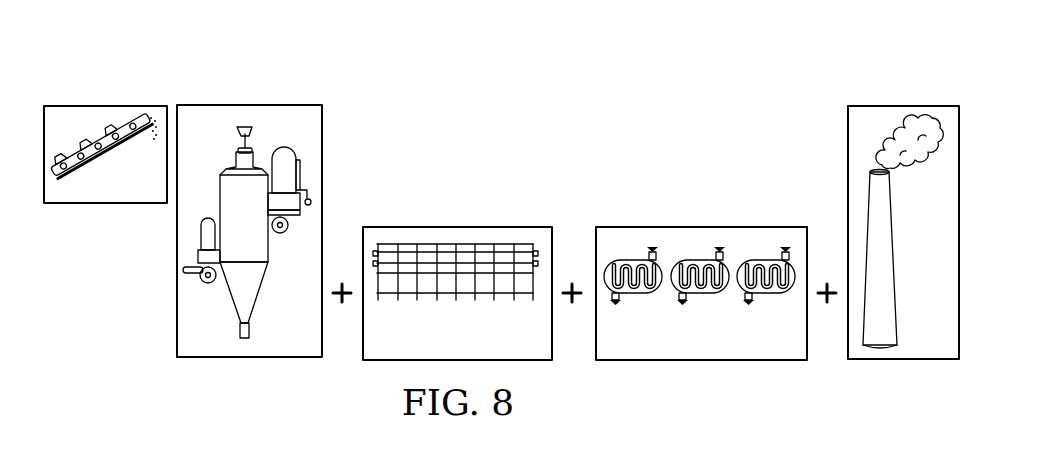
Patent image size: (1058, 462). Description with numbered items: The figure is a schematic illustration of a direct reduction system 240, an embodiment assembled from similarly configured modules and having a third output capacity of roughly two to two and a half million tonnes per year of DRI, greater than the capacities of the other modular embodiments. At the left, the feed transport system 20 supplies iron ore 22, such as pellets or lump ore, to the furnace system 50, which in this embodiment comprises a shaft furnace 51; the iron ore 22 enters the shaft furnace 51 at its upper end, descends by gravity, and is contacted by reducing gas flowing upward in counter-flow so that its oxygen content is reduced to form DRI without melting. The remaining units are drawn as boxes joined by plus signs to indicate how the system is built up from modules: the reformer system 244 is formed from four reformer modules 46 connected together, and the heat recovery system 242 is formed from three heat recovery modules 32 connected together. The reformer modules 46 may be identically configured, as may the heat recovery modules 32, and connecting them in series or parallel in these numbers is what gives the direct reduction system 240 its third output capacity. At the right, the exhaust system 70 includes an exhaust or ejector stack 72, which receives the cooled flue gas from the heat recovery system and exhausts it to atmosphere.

The feed transport system 20 is at (98, 100).
The iron ore 22 is at (151, 148).
The furnace system 50 is at (243, 98).
The shaft furnace 51 is at (223, 174).
The direct reduction system 240 is at (739, 83).
The reformer system 244 is at (452, 220).
The reformer modules 46 is at (405, 285).
The heat recovery system 242 is at (704, 221).
The heat recovery modules 32 is at (638, 294).
The exhaust system 70 is at (908, 100).
The exhaust stack 72 is at (897, 268).